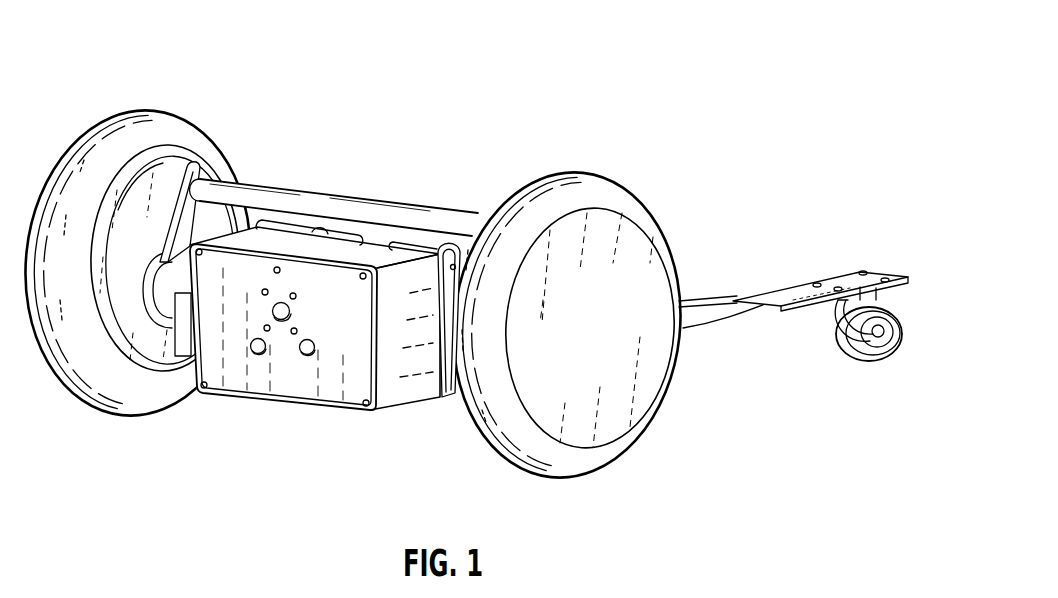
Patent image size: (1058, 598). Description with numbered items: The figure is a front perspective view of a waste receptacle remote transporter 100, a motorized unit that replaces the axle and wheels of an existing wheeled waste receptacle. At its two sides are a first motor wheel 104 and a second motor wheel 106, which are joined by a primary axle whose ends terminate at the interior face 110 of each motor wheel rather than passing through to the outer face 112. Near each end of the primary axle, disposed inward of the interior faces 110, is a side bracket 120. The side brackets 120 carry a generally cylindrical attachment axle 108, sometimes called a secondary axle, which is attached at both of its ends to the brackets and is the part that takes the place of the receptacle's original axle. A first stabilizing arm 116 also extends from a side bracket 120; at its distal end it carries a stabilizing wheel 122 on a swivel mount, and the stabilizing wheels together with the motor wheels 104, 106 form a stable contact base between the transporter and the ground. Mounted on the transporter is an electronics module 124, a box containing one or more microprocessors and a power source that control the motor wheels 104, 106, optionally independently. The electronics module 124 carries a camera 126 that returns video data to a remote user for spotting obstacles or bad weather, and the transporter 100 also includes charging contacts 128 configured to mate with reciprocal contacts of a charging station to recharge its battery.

The waste receptacle remote transporter 100 is at (722, 51).
The first motor wheel 104 is at (598, 187).
The second motor wheel 106 is at (141, 111).
The attachment axle 108 is at (384, 203).
The interior face 110 is at (147, 197).
The outer face 112 is at (650, 362).
The first stabilizing arm 116 is at (820, 276).
The side bracket 120 is at (206, 166).
The stabilizing wheel 122 is at (873, 362).
The electronics module 124 is at (280, 372).
The camera 126 is at (279, 321).
The charging contacts 128 is at (252, 351).